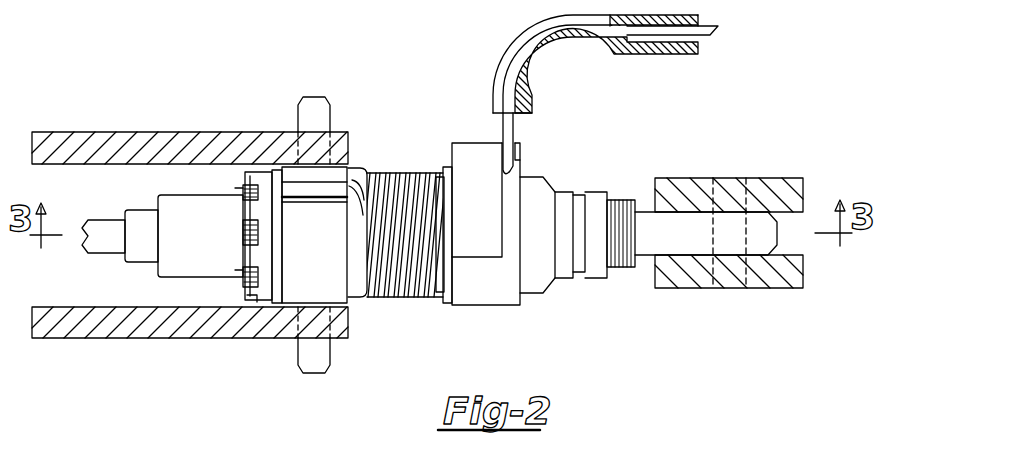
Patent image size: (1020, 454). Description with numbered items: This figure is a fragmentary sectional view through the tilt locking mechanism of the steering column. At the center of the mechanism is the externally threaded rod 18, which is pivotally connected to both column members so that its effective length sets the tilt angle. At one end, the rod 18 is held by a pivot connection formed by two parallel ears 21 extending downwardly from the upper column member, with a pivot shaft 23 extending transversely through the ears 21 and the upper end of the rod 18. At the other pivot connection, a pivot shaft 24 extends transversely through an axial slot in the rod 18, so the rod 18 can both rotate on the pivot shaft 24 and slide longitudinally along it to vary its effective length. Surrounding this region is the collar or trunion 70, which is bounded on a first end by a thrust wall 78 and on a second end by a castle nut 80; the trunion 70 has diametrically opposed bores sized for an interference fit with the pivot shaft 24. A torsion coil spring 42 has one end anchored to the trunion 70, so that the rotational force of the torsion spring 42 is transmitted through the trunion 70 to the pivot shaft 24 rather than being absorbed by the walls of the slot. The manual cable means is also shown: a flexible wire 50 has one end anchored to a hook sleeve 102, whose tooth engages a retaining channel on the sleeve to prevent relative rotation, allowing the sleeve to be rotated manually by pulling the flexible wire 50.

The externally threaded rod 18 is at (650, 250).
The ears 21 is at (800, 193).
The pivot shaft 23 is at (748, 200).
The pivot shaft 24 is at (300, 122).
The torsion coil spring 42 is at (393, 178).
The flexible wire 50 is at (510, 133).
The trunion 70 is at (332, 242).
The thrust wall 78 is at (356, 300).
The castle nut 80 is at (265, 298).
The hook sleeve 102 is at (481, 300).